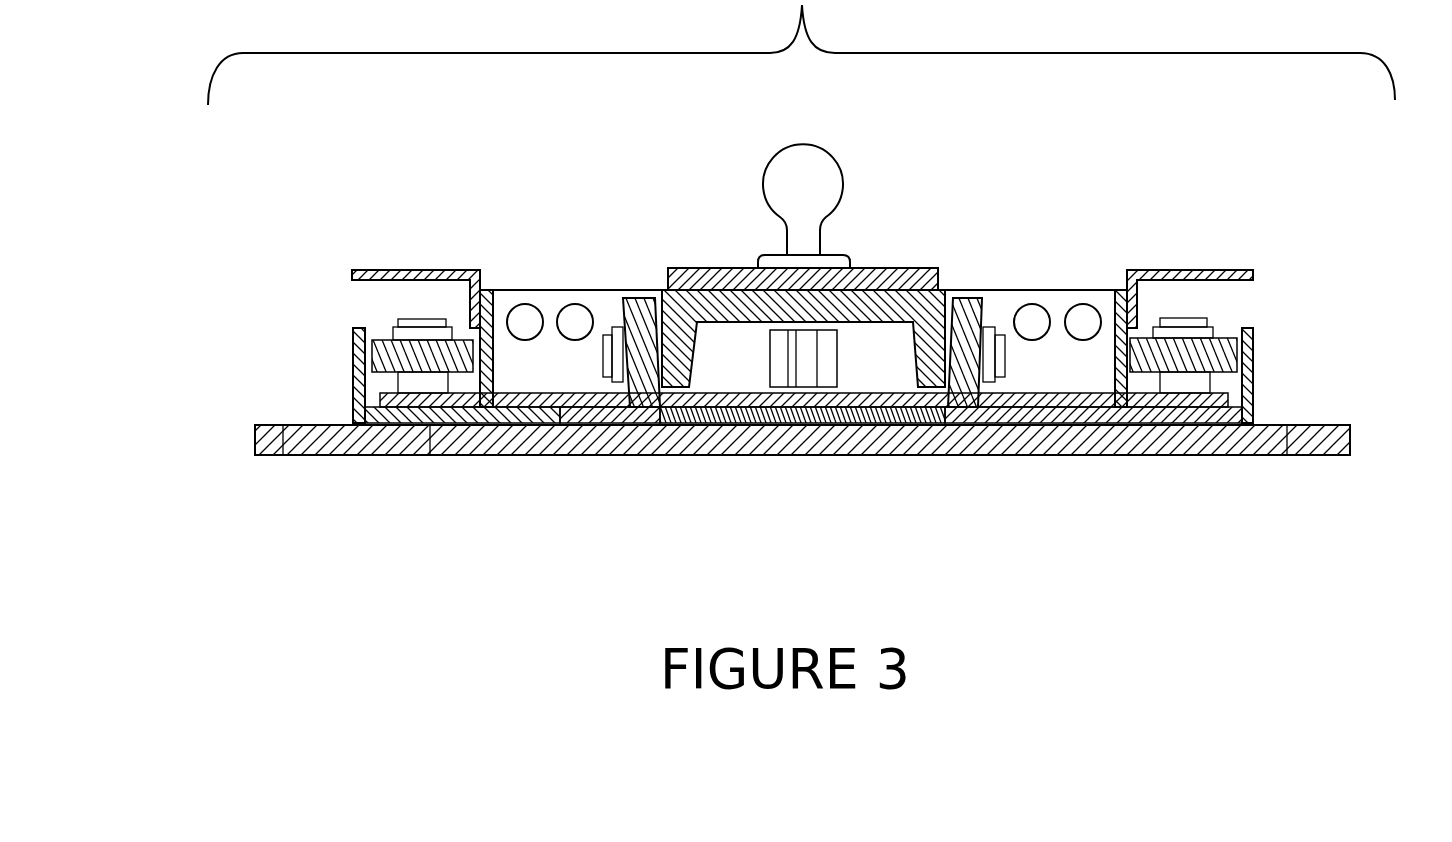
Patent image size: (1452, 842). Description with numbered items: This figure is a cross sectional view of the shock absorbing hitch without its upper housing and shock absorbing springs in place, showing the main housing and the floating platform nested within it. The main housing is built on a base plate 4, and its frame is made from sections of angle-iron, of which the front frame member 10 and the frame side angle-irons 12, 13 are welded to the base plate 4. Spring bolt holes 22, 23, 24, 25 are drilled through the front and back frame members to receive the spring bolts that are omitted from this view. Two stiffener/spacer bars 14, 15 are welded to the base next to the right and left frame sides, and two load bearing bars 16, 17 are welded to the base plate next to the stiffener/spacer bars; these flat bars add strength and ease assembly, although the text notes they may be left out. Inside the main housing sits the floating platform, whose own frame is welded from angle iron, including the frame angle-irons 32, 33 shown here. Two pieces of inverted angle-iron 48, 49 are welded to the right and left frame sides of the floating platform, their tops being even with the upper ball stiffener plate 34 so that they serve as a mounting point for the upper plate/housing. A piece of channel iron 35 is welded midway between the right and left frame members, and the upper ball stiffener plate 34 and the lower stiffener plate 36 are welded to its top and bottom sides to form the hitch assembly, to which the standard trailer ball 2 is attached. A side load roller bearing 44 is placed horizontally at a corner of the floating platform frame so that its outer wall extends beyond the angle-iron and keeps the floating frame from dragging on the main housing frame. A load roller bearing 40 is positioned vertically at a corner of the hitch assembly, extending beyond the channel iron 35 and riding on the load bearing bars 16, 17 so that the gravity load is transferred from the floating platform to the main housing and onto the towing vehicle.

The trailer ball 2 is at (822, 148).
The base plate 4 is at (1352, 443).
The front frame member 10 is at (1050, 290).
The frame side angle-iron 12 is at (1257, 388).
The frame side angle-iron 13 is at (355, 375).
The stiffener/spacer bar 14 is at (1087, 417).
The stiffener/spacer bar 15 is at (542, 428).
The load bearing bar 16 is at (960, 408).
The load bearing bar 17 is at (643, 428).
The spring bolt hole 22 is at (1088, 308).
The spring bolt hole 23 is at (577, 305).
The spring bolt hole 24 is at (1048, 308).
The spring bolt hole 25 is at (538, 308).
The floating platform frame angle-iron 32 is at (1132, 268).
The floating platform frame angle-iron 33 is at (494, 290).
The upper ball stiffener plate 34 is at (880, 268).
The channel iron 35 is at (683, 343).
The lower stiffener plate 36 is at (860, 330).
The load roller bearing 40 is at (638, 296).
The side load roller bearing 44 is at (1227, 340).
The inverted angle-iron 48 is at (1255, 270).
The inverted angle-iron 49 is at (370, 272).